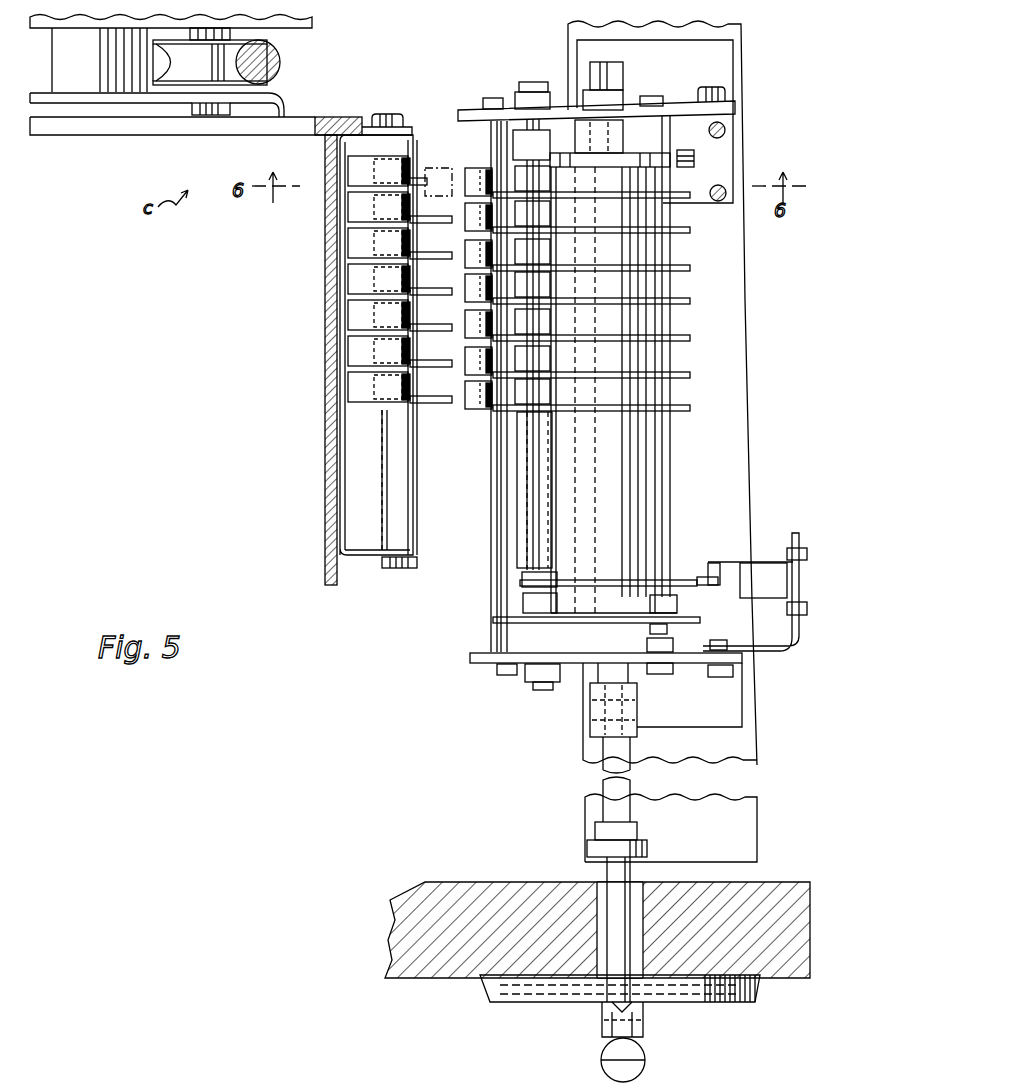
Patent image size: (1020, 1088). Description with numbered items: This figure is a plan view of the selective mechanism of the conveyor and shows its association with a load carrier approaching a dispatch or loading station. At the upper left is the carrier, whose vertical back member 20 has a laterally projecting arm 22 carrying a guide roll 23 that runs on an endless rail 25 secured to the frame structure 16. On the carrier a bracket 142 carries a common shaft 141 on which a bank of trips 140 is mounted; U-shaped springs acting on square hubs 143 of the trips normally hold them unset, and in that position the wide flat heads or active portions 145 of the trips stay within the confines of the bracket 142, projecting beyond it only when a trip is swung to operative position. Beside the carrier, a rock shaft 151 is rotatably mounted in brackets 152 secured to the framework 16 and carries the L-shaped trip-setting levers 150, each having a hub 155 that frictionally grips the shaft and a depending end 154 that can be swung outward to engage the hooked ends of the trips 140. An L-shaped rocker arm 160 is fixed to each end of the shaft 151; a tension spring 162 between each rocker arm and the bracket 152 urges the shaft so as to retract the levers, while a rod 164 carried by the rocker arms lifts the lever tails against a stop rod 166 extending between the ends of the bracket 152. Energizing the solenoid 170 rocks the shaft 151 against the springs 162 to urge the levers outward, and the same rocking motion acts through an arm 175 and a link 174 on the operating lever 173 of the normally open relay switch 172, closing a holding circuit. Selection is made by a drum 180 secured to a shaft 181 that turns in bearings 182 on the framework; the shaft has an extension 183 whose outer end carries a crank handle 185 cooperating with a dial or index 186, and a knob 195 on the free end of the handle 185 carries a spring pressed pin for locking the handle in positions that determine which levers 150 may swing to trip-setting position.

The frame structure 16 is at (735, 426).
The vertical back member 20 is at (138, 110).
The laterally projecting arm 22 is at (298, 125).
The guide roll 23 is at (242, 33).
The endless rail 25 is at (282, 62).
The trips 140 is at (347, 257).
The common shaft 141 is at (405, 530).
The bracket 142 is at (365, 560).
The square hubs 143 is at (410, 280).
The active portions or heads 145 is at (397, 203).
The trip-setting levers 150 is at (598, 266).
The rock shaft 151 is at (516, 84).
The brackets 152 is at (460, 116).
The depending ends 154 is at (472, 380).
The hub 155 is at (551, 323).
The rocker arm 160 is at (565, 152).
The tension spring 162 is at (535, 690).
The rod 164 is at (665, 613).
The stop rod 166 is at (673, 532).
The solenoid 170 is at (687, 167).
The relay switch 172 is at (760, 570).
The operating lever 173 is at (700, 577).
The link 174 is at (543, 605).
The arm 175 is at (523, 579).
The drum 180 is at (634, 488).
The shaft 181 is at (615, 72).
The bearings 182 is at (628, 118).
The extension 183 is at (633, 877).
The crank handle 185 is at (603, 1018).
The dial or index 186 is at (700, 998).
The knob 195 is at (648, 1068).